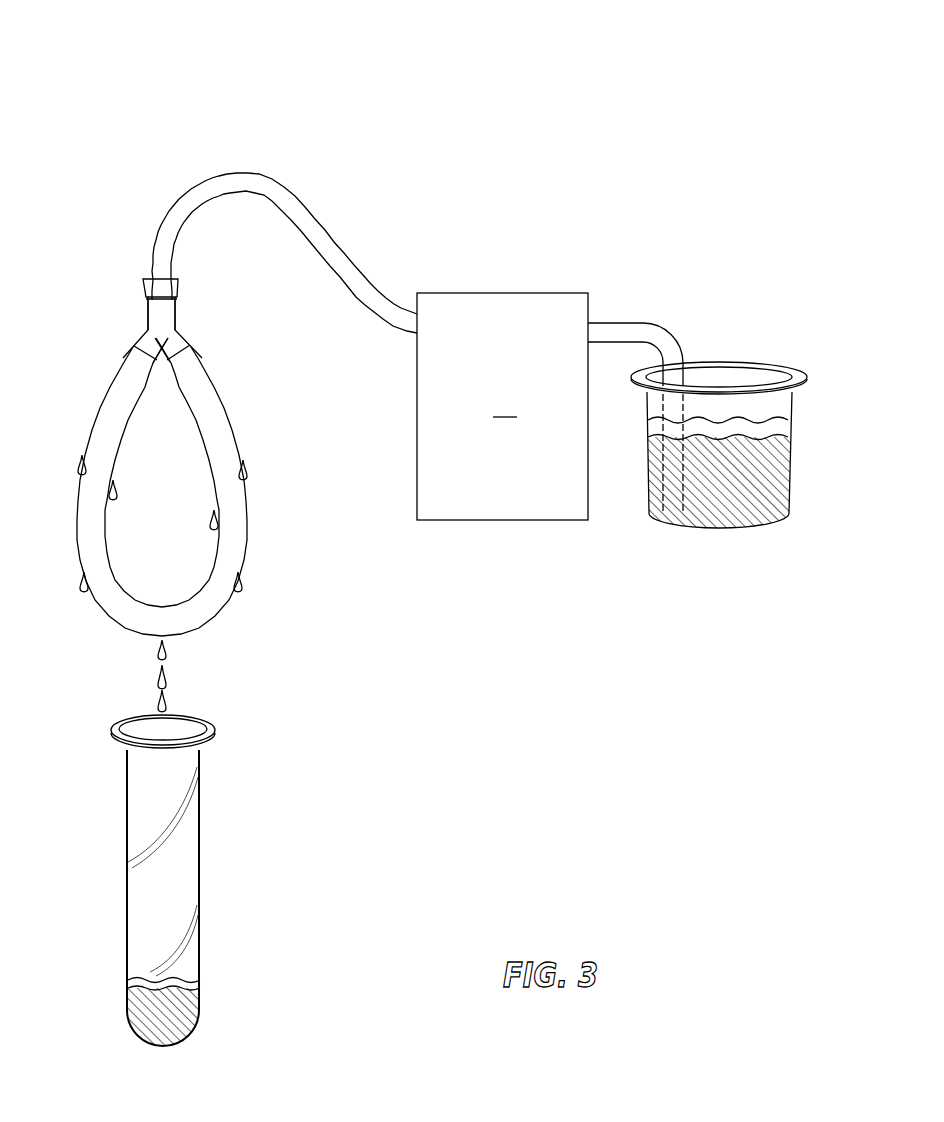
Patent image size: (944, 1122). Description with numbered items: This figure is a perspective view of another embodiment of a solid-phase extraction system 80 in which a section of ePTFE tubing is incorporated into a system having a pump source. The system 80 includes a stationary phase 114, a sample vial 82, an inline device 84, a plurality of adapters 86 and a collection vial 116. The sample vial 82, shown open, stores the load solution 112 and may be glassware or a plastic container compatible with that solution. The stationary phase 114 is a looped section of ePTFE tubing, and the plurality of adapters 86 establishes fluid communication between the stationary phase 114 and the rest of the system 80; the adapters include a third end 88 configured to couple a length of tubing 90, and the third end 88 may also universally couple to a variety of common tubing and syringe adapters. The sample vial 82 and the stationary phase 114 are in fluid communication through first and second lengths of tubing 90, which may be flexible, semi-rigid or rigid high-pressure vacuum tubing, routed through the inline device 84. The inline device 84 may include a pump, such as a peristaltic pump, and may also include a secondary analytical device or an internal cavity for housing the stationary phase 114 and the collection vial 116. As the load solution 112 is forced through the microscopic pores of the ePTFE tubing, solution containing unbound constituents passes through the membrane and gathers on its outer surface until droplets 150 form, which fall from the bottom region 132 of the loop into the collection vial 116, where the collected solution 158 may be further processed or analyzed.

The solid-phase extraction system 80 is at (362, 150).
The sample vial 82 is at (745, 351).
The inline device 84 is at (502, 406).
The plurality of adapters 86 is at (178, 319).
The third end 88 is at (132, 326).
The length of tubing 90 is at (157, 199).
The load solution 112 is at (758, 418).
The stationary phase 114 is at (233, 408).
The collection vial 116 is at (211, 783).
The bottom portion of loop 132 is at (148, 642).
The droplets 150 is at (245, 477).
The collected solution 158 is at (190, 1003).